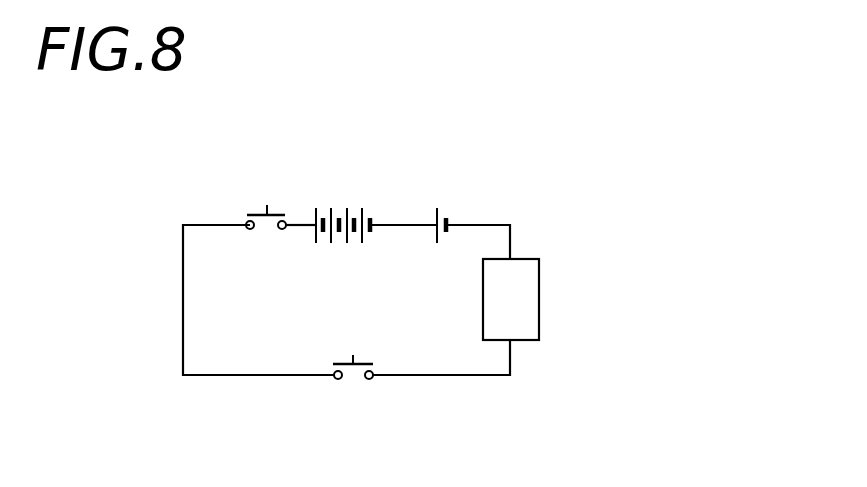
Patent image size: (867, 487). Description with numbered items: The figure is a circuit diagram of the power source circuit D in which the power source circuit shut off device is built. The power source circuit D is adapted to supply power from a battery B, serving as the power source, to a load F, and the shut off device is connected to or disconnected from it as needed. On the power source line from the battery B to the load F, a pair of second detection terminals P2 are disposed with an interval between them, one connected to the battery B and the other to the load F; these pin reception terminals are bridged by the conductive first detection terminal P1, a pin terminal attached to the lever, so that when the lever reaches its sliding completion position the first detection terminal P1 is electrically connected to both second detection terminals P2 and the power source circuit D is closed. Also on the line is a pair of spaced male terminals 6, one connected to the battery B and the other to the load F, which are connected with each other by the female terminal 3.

The power source circuit D is at (177, 206).
The first detection terminal P1 is at (270, 212).
The second detection terminals P2 is at (247, 221).
The battery B is at (347, 207).
The load F is at (531, 303).
The female terminal 3 is at (362, 364).
The male terminals 6 is at (336, 381).